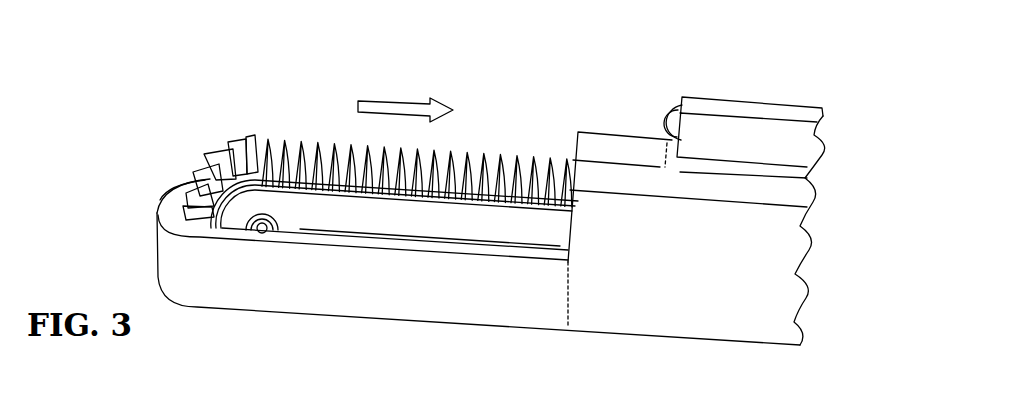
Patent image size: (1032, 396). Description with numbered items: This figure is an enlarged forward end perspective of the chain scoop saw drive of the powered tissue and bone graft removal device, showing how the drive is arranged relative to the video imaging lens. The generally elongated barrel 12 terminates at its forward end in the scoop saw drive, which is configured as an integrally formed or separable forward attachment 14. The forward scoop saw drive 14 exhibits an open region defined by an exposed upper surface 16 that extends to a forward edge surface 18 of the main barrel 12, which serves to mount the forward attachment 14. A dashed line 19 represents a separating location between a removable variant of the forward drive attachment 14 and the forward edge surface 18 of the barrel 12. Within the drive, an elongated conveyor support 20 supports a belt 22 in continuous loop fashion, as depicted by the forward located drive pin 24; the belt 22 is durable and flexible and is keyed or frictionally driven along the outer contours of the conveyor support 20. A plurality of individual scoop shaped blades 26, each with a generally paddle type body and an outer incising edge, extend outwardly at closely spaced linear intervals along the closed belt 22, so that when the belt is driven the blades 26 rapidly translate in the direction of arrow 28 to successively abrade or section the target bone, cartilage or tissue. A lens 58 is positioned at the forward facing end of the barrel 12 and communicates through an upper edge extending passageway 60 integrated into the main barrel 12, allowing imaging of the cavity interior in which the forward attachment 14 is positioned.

The barrel 12 is at (617, 333).
The forward attachment 14 is at (310, 313).
The exposed upper surface 16 is at (175, 197).
The forward edge surface 18 is at (578, 140).
The dashed line 19 is at (568, 328).
The conveyor support 20 is at (383, 222).
The belt 22 is at (268, 131).
The drive pin 24 is at (258, 230).
The scoop shaped blades 26 is at (247, 142).
The arrow 28 is at (397, 105).
The lens 58 is at (667, 108).
The passageway 60 is at (745, 100).